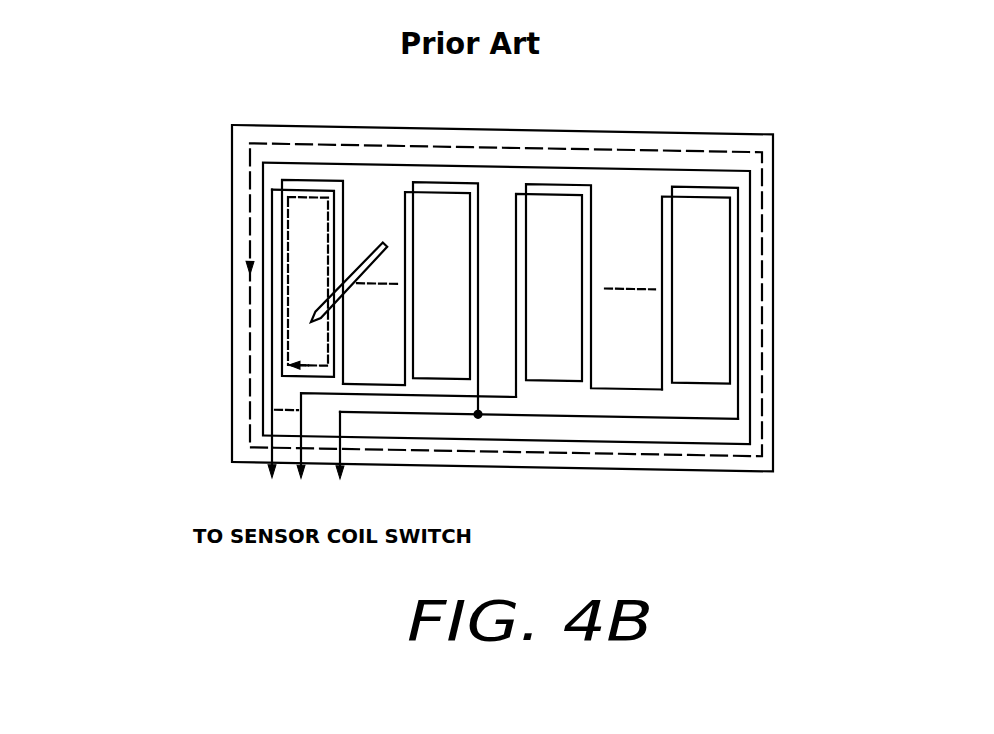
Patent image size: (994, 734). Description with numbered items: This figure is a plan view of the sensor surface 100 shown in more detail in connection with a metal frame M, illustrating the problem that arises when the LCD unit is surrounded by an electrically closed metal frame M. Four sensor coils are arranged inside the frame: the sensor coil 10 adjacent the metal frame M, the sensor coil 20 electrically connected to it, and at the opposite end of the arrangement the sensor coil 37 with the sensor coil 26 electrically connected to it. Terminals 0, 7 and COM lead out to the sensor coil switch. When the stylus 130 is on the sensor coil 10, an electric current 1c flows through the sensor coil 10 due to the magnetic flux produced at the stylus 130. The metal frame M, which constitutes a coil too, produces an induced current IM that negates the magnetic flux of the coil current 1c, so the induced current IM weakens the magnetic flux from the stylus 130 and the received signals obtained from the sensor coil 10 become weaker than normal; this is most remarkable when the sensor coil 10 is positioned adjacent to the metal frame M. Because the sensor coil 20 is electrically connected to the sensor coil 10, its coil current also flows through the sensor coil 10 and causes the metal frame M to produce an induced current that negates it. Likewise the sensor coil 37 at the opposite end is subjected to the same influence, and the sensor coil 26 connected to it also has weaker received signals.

The sensor surface 100 is at (661, 132).
The sensor coil 10 is at (345, 193).
The sensor coil 20 is at (405, 204).
The sensor coil 26 is at (593, 211).
The sensor coil 37 is at (663, 252).
The stylus 130 is at (347, 292).
The coil current 1c is at (465, 307).
The terminal 0 is at (271, 353).
The terminal 7 is at (405, 454).
The common terminal COM is at (532, 462).
The induced current IM is at (248, 358).
The metal frame M is at (232, 237).